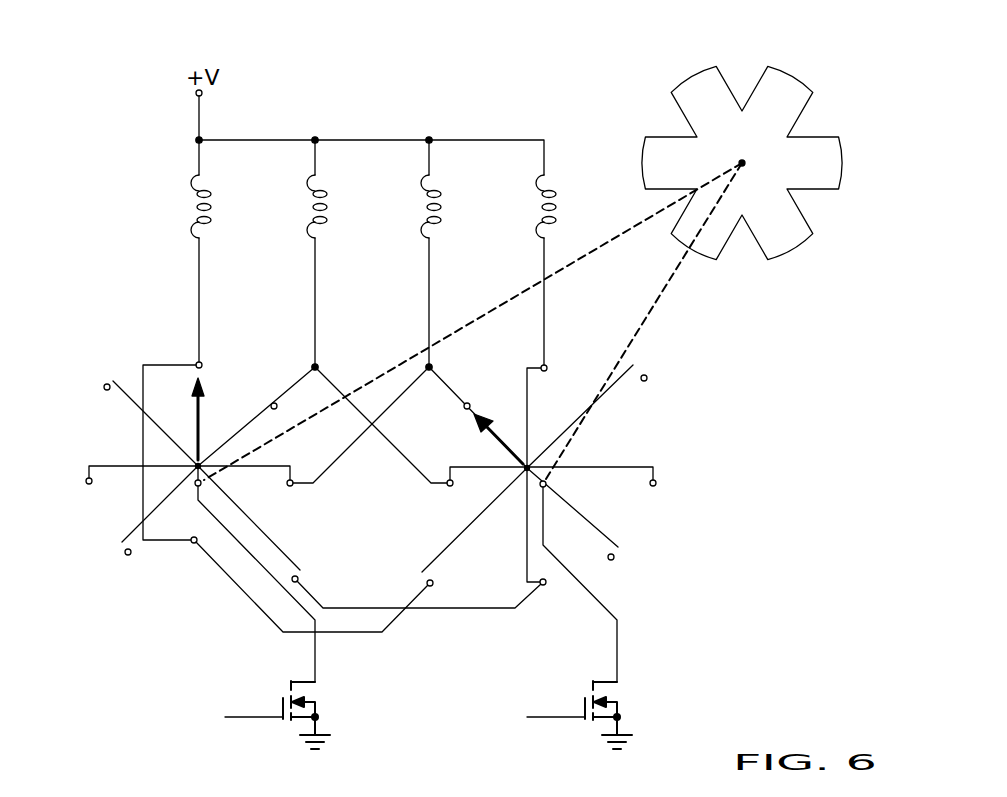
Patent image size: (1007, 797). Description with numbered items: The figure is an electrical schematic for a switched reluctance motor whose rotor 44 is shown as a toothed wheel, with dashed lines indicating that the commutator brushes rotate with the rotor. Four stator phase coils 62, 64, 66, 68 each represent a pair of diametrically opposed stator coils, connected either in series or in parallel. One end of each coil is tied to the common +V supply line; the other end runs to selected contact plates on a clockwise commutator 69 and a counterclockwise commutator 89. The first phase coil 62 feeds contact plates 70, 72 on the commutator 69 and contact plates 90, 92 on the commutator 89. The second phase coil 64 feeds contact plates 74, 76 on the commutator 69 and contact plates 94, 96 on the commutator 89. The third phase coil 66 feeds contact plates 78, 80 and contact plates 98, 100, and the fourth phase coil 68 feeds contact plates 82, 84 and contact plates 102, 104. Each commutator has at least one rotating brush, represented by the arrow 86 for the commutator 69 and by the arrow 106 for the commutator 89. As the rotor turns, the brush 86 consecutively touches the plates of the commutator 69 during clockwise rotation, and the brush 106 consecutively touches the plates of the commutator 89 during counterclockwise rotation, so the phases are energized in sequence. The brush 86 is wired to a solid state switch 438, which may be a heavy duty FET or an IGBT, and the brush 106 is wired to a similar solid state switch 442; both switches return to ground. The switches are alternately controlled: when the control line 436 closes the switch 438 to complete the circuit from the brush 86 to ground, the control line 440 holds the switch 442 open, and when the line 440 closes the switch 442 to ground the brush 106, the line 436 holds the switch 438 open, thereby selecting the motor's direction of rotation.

The rotor 44 is at (812, 125).
The first phase stator coil 62 is at (188, 212).
The second phase stator coil 64 is at (303, 213).
The third phase stator coil 66 is at (418, 212).
The fourth phase stator coil 68 is at (557, 207).
The commutator 69 is at (78, 452).
The contact plate 70 is at (196, 362).
The contact plate 72 is at (192, 543).
The contact plate 74 is at (273, 403).
The contact plate 76 is at (126, 555).
The contact plate 78 is at (290, 486).
The contact plate 80 is at (89, 484).
The contact plate 82 is at (298, 578).
The contact plate 84 is at (104, 386).
The rotating brush 86 is at (201, 427).
The commutator 89 is at (668, 455).
The contact plate 90 is at (647, 377).
The contact plate 92 is at (433, 583).
The contact plate 94 is at (656, 484).
The contact plate 96 is at (447, 486).
The contact plate 98 is at (613, 560).
The contact plate 100 is at (468, 403).
The contact plate 102 is at (548, 368).
The contact plate 104 is at (546, 584).
The rotating brush 106 is at (502, 445).
The control line 436 is at (250, 718).
The solid state switch 438 is at (283, 700).
The control line 440 is at (553, 718).
The solid state switch 442 is at (585, 700).